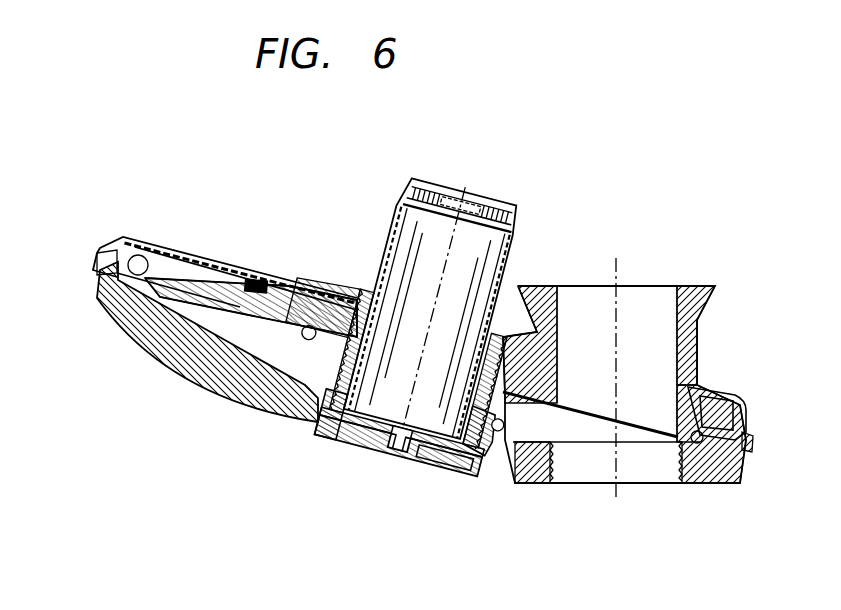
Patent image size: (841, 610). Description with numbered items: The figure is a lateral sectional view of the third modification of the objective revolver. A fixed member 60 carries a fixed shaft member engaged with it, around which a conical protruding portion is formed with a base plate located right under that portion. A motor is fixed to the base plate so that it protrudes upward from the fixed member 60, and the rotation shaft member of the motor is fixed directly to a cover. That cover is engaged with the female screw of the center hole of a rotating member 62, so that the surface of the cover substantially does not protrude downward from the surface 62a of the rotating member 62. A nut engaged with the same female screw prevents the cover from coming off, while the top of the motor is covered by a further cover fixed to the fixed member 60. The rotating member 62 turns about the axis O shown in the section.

The fixed member 60 is at (322, 290).
The rotating member 62 is at (712, 480).
The surface of the rotating member 62a is at (125, 343).
The optical axis O is at (628, 258).